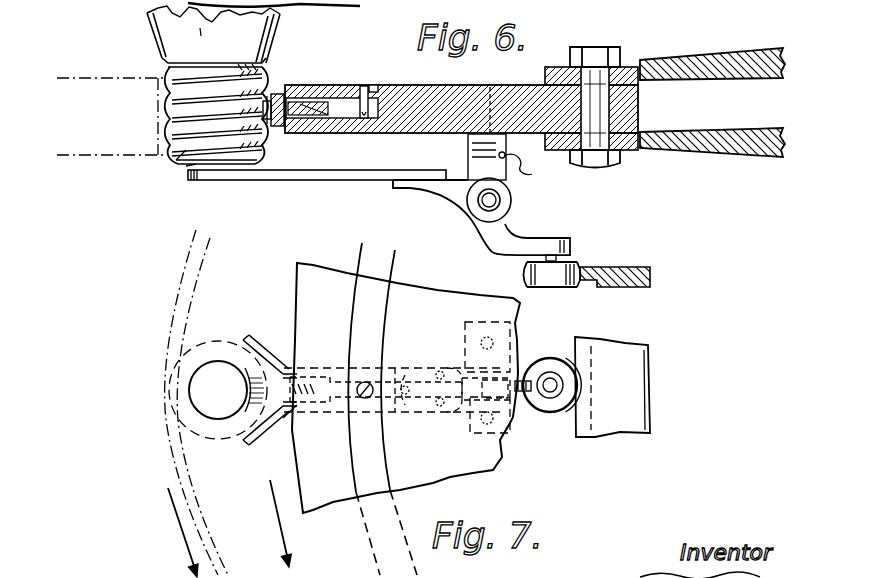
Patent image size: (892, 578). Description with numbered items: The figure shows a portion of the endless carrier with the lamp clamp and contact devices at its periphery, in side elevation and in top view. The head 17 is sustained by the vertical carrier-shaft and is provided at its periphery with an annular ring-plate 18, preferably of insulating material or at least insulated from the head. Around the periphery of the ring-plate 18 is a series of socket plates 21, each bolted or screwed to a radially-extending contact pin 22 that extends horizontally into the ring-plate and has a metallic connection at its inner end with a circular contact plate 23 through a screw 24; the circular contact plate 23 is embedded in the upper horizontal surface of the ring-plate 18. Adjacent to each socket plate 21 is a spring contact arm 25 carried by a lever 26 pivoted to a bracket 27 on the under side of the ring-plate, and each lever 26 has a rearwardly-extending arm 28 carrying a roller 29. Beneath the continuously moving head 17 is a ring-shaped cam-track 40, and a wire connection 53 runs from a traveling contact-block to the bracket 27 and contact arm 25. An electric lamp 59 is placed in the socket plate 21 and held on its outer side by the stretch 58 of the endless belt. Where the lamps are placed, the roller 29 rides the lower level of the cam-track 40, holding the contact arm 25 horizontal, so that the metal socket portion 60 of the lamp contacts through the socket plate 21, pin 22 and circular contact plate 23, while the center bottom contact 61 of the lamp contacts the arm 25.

In FIG. 6, the head 17 is at (703, 59).
In FIG. 6, the annular ring-plate 18 is at (436, 134).
In FIG. 7, the annular ring-plate 18 is at (427, 294).
In FIG. 6, the socket plate 21 is at (274, 92).
In FIG. 7, the socket plate 21 is at (257, 350).
In FIG. 6, the contact pin 22 is at (323, 86).
In FIG. 7, the contact pin 22 is at (329, 363).
In FIG. 6, the circular contact plate 23 is at (374, 90).
In FIG. 7, the circular contact plate 23 is at (380, 328).
In FIG. 6, the screw 24 is at (367, 86).
In FIG. 7, the screw 24 is at (365, 382).
In FIG. 6, the spring contact arm 25 is at (317, 187).
In FIG. 7, the spring contact arm 25 is at (283, 418).
In FIG. 6, the lever 26 is at (458, 187).
In FIG. 7, the lever 26 is at (462, 378).
In FIG. 6, the bracket 27 is at (468, 158).
In FIG. 6, the rearwardly-extending arm 28 is at (523, 234).
In FIG. 7, the rearwardly-extending arm 28 is at (544, 372).
In FIG. 6, the roller 29 is at (552, 282).
In FIG. 7, the roller 29 is at (551, 412).
In FIG. 6, the cam-track 40 is at (651, 279).
In FIG. 7, the cam-track 40 is at (646, 388).
In FIG. 6, the wire connection 53 is at (532, 174).
In FIG. 6, the stretch of endless belt 58 is at (158, 115).
In FIG. 7, the stretch of endless belt 58 is at (180, 452).
In FIG. 6, the electric lamp 59 is at (153, 38).
In FIG. 6, the metal socket portion 60 is at (183, 148).
In FIG. 6, the center bottom contact 61 is at (190, 163).